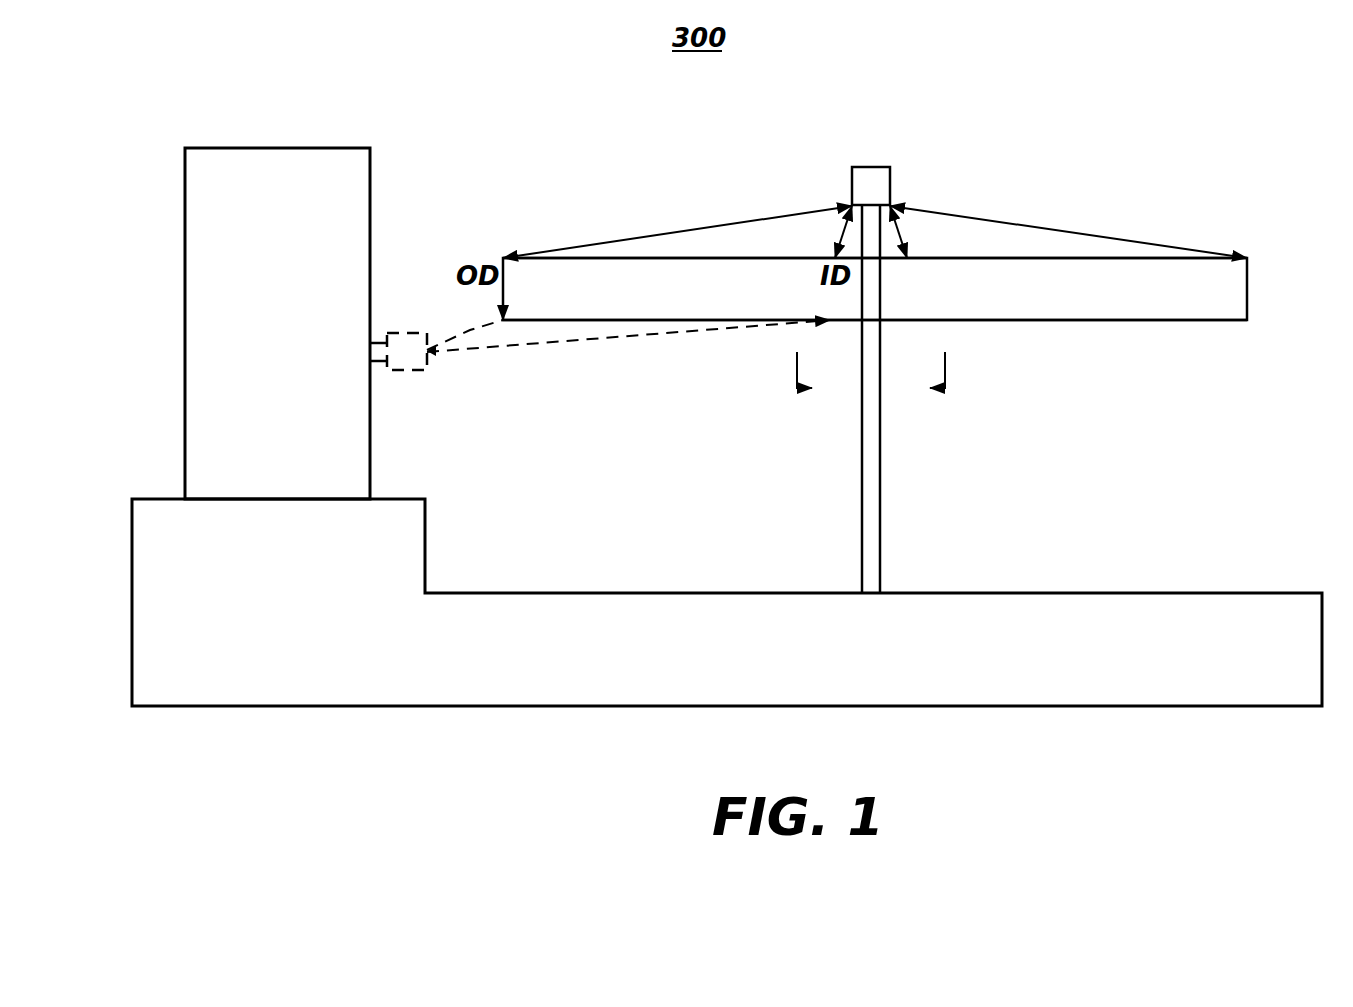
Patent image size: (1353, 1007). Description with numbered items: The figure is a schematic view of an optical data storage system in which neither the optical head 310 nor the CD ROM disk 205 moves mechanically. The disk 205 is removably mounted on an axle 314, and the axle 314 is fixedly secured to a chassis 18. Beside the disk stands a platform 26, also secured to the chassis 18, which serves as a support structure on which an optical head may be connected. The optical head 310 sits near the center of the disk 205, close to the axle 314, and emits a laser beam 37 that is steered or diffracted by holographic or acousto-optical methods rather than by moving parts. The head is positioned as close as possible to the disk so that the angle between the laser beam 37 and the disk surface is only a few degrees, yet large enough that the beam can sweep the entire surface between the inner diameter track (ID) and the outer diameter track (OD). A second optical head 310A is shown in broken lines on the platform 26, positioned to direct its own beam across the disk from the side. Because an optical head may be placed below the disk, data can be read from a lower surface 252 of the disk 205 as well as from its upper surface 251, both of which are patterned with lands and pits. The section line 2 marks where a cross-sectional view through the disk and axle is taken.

The platform 26 is at (294, 301).
The chassis 18 is at (518, 681).
The axle 314 is at (881, 490).
The optical head 310 is at (880, 185).
The optical head 310A is at (413, 367).
The CD ROM disk 205 is at (1188, 294).
The upper surface 251 is at (1137, 258).
The lower surface 252 is at (1157, 321).
The laser beam 37 is at (740, 222).
The section line 2- 2 is at (871, 377).